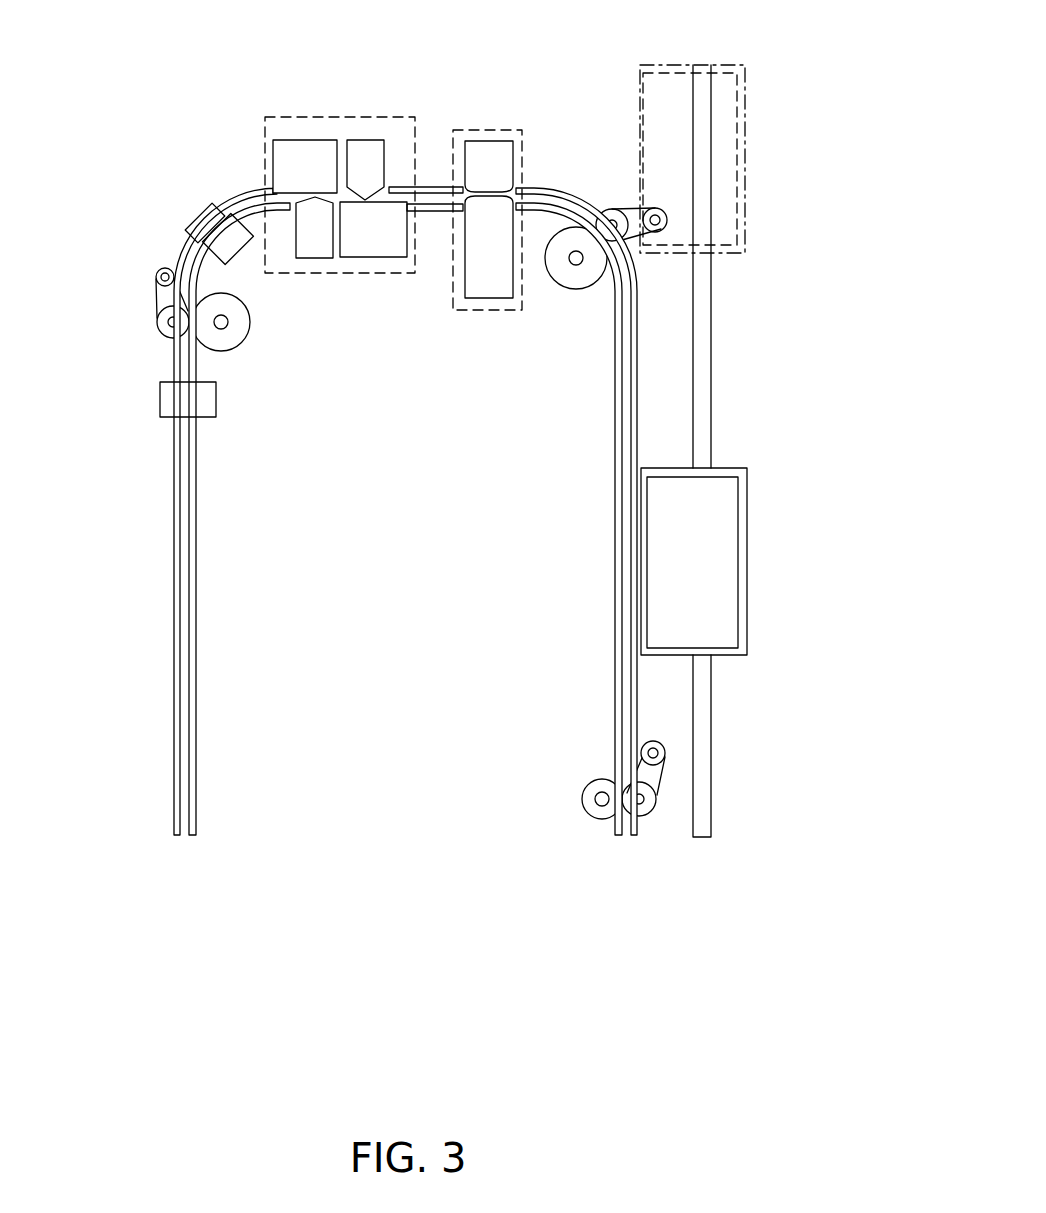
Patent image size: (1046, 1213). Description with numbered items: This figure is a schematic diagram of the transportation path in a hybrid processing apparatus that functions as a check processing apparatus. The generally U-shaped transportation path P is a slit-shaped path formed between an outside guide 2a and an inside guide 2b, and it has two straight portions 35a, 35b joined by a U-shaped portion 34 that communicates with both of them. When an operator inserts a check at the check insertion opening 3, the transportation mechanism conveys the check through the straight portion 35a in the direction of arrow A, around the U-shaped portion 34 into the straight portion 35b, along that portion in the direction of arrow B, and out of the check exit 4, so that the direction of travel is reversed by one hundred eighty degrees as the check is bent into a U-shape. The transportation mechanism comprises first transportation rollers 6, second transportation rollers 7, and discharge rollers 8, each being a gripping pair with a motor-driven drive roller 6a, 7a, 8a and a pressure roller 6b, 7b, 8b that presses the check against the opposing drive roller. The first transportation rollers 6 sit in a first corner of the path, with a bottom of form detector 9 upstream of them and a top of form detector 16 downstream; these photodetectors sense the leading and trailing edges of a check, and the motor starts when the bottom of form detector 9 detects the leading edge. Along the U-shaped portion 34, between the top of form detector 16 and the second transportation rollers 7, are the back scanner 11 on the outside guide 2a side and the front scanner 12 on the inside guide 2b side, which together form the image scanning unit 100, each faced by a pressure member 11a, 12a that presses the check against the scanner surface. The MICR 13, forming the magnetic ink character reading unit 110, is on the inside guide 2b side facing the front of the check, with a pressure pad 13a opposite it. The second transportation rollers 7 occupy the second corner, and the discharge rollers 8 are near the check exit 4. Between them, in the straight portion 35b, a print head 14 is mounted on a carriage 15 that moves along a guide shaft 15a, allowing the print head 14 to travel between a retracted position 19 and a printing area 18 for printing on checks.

The outside guide 2a is at (638, 338).
The inside guide 2b is at (614, 292).
The check insertion opening 3 is at (186, 843).
The check exit 4 is at (634, 845).
The first transportation rollers 6 is at (181, 221).
The drive roller 6a is at (232, 300).
The pressure roller 6b is at (160, 292).
The second transportation rollers 7 is at (628, 157).
The drive roller 7a is at (556, 230).
The pressure roller 7b is at (620, 208).
The discharge rollers 8 is at (770, 738).
The drive roller 8a is at (600, 781).
The pressure roller 8b is at (662, 776).
The bottom of form (BOF) detector 9 is at (168, 400).
The back scanner 11 is at (312, 148).
The pressure member (roller) 11a is at (312, 253).
The front scanner 12 is at (371, 258).
The pressure member (roller) 12a is at (368, 150).
The MICR 13 is at (492, 240).
The pressure member (pad) 13a is at (490, 150).
The print head 14 is at (722, 493).
The carriage 15 is at (748, 505).
The guide shaft 15a is at (712, 373).
The top of form (TOF) detector 16 is at (216, 209).
The printing area 18 is at (572, 395).
The retracted position 19 is at (758, 73).
The U-shaped portion 34 is at (428, 168).
The straight portion 35a is at (167, 494).
The straight portion 35b is at (672, 407).
The image scanning unit 100 is at (395, 113).
The magnetic ink character reading unit 110 is at (492, 316).
The transportation path P is at (248, 207).
The arrow A is at (186, 855).
The arrow B is at (623, 847).